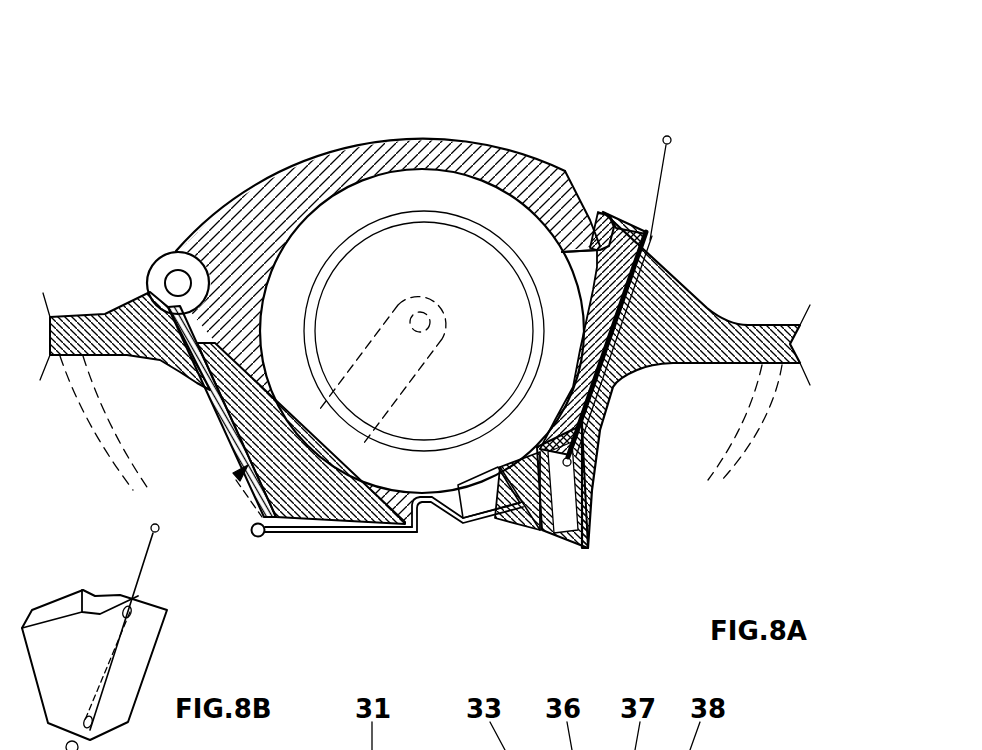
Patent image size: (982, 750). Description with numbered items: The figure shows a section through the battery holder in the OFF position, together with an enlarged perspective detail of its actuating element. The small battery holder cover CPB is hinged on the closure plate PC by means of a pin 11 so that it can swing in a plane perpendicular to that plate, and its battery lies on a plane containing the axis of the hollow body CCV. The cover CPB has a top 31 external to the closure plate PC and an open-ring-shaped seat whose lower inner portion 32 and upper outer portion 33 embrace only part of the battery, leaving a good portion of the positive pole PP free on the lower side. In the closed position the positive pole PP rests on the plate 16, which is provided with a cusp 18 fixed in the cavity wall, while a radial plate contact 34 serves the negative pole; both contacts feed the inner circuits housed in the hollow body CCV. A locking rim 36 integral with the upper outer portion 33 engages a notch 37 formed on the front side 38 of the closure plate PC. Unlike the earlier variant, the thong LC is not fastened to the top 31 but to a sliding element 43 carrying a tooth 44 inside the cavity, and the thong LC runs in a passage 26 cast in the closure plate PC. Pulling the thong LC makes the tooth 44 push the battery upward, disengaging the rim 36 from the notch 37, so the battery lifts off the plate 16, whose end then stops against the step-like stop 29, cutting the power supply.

In FIG. 8A, the pin 11 is at (160, 262).
In FIG. 8A, the plate 16 is at (305, 535).
In FIG. 8A, the cusp 18 is at (430, 503).
In FIG. 8A, the passage 26 is at (690, 290).
In FIG. 8A, the step-like stop 29 is at (495, 527).
In FIG. 8A, the top 31 is at (372, 137).
In FIG. 8A, the lower inner portion 32 is at (240, 385).
In FIG. 8A, the upper outer portion 33 is at (550, 195).
In FIG. 8A, the radial plate contact 34 is at (233, 473).
In FIG. 8A, the locking rim 36 is at (603, 212).
In FIG. 8A, the notch 37 is at (632, 250).
In FIG. 8A, the front side 38 is at (646, 232).
In FIG. 8A, the sliding element 43 is at (597, 510).
In FIG. 8B, the sliding element 43 is at (130, 673).
In FIG. 8A, the tooth 44 is at (540, 545).
In FIG. 8B, the tooth 44 is at (73, 603).
In FIG. 8A, the small battery holder cover CPB is at (255, 133).
In FIG. 8A, the closure plate PC is at (93, 305).
In FIG. 8A, the thong LC is at (660, 183).
In FIG. 8B, the thong LC is at (147, 560).
In FIG. 8A, the positive pole PP is at (412, 455).
In FIG. 8A, the hollow body CCV is at (738, 437).